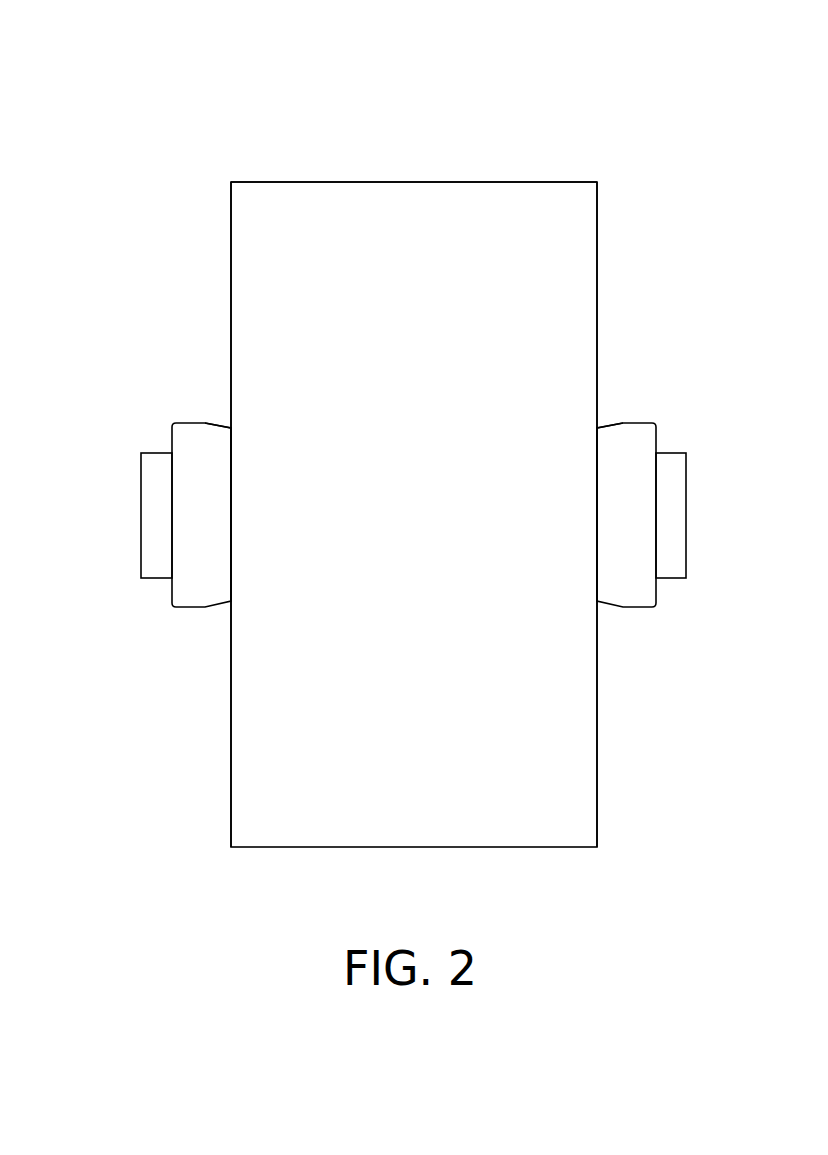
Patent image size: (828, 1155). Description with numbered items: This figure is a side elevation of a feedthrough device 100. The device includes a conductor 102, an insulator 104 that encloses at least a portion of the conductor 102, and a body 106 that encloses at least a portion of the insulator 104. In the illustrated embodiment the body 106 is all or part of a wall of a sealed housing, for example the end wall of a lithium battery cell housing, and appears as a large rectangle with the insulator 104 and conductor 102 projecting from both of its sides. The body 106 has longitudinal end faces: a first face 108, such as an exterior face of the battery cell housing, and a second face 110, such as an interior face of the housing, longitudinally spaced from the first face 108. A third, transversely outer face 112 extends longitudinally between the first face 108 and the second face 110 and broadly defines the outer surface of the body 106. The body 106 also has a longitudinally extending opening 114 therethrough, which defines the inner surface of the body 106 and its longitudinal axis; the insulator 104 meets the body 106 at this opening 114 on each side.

The feedthrough device 100 is at (222, 78).
The conductor 102 is at (141, 560).
The insulator 104 is at (172, 440).
The body 106 is at (231, 182).
The first face 108 is at (231, 770).
The second face 110 is at (597, 732).
The third face 112 is at (408, 182).
The opening 114 is at (231, 428).